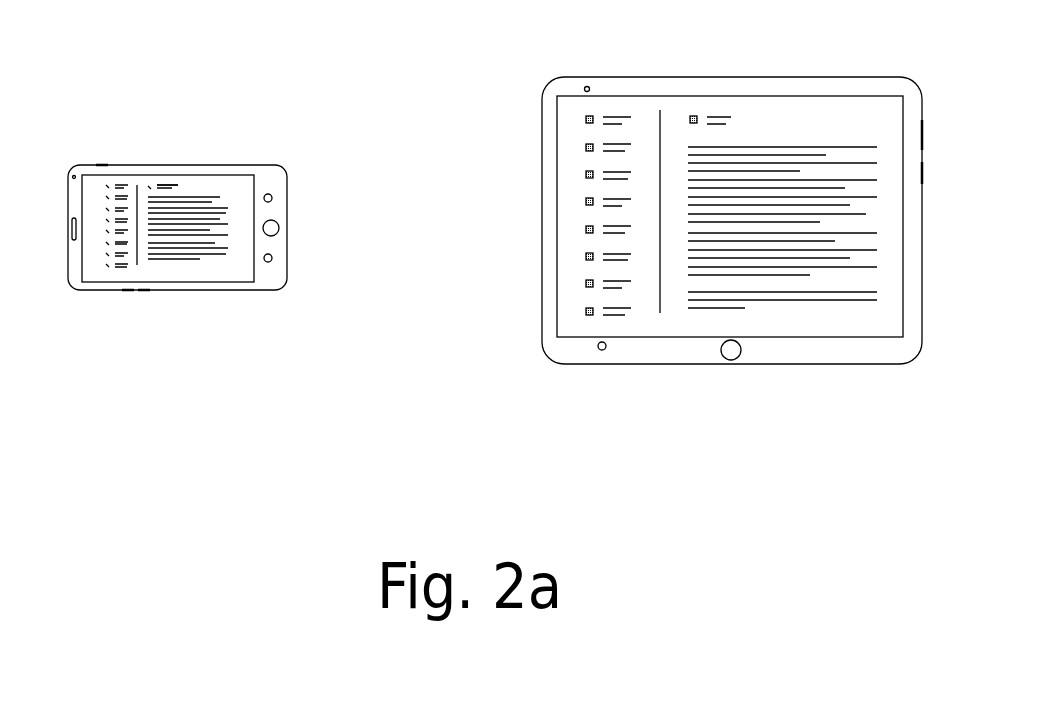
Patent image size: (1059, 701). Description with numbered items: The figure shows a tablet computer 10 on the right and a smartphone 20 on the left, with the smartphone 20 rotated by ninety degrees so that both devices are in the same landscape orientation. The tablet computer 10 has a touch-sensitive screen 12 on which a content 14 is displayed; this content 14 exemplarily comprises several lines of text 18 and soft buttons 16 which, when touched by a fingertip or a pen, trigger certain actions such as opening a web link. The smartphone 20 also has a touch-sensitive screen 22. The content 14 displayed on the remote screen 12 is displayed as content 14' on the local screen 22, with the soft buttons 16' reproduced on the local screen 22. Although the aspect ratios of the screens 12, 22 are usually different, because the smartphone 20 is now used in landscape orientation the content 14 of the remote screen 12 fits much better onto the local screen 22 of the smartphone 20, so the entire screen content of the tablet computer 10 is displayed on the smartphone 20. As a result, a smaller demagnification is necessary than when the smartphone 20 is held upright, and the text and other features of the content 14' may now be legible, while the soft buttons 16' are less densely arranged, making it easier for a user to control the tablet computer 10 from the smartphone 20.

The tablet computer 10 is at (697, 388).
The touch-sensitive screen 12 is at (818, 127).
The content 14 is at (730, 283).
The soft buttons 16 is at (556, 237).
The lines of text 18 is at (780, 302).
The smartphone 20 is at (178, 308).
The content 14' is at (168, 278).
The soft buttons 16' is at (73, 224).
The touch-sensitive screen 22 is at (222, 188).